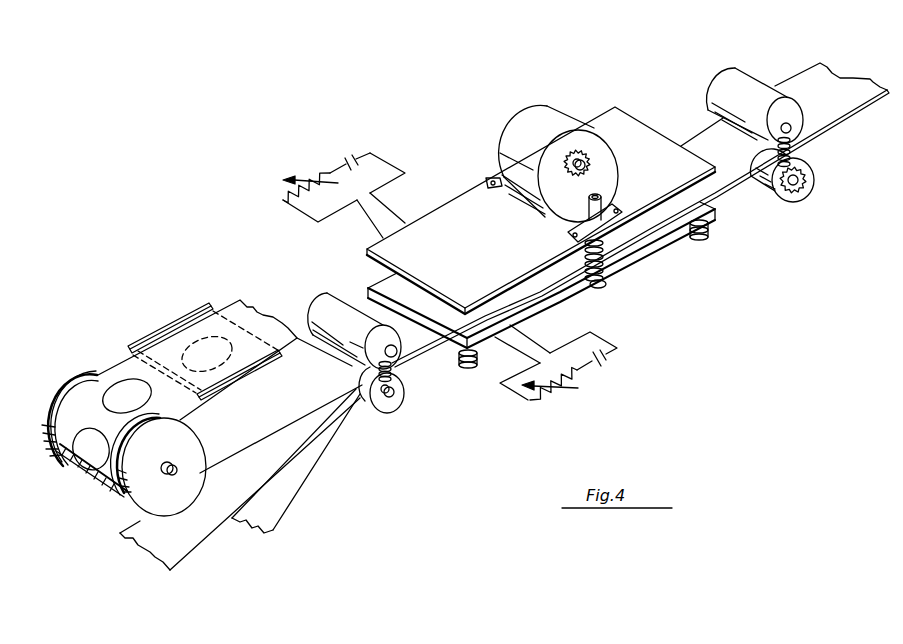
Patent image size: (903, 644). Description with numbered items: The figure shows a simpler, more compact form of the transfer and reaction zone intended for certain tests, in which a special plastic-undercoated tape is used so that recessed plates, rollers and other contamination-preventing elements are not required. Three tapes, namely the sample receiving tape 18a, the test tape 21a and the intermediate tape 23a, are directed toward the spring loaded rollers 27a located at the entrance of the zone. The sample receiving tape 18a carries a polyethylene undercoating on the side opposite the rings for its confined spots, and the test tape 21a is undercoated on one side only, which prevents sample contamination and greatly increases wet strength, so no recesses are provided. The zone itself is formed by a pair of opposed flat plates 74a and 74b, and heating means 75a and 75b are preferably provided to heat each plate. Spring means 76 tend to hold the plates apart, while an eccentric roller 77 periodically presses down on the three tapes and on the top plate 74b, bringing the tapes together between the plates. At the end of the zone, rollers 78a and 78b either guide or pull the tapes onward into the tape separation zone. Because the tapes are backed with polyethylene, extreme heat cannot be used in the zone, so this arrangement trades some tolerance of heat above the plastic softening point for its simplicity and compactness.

The sample receiving tape 18a is at (298, 358).
The test tape 21a is at (295, 491).
The intermediate tape 23a is at (187, 546).
The spring loaded rollers 27a is at (332, 296).
The flat plate 74a is at (662, 247).
The flat plate 74b is at (645, 128).
The heating means 75a is at (617, 336).
The heating means 75b is at (302, 213).
The spring means 76 is at (602, 276).
The eccentric roller 77 is at (566, 106).
The roller 78a is at (778, 196).
The roller 78b is at (754, 66).